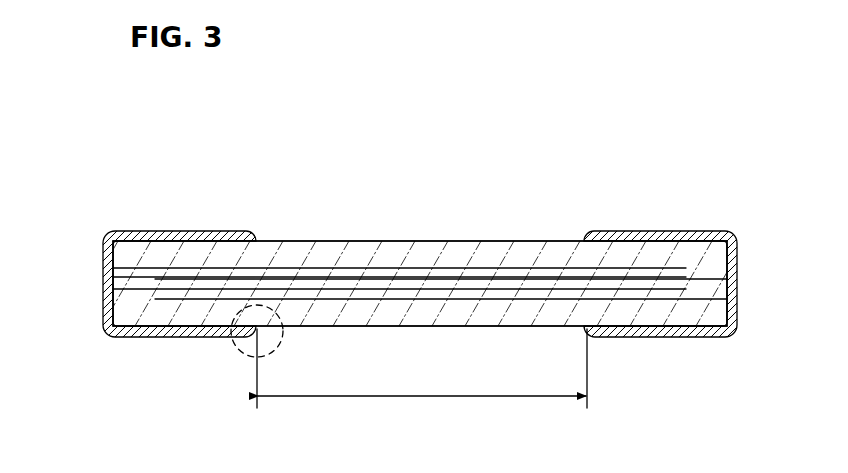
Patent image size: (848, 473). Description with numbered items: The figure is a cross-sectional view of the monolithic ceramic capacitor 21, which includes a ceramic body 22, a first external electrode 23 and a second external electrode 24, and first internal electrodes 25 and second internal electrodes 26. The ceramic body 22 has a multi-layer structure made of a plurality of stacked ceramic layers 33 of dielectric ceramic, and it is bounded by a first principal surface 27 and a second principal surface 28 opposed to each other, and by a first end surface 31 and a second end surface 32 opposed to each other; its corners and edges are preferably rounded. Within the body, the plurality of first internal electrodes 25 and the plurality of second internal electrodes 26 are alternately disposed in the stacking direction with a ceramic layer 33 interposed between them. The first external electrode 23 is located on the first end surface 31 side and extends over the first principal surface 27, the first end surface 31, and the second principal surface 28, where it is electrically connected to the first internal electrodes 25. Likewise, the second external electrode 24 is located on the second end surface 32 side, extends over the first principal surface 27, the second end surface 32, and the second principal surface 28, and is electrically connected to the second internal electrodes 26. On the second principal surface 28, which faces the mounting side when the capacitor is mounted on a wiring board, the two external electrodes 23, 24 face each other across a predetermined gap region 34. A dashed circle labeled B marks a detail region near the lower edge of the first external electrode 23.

The monolithic ceramic capacitor 21 is at (202, 122).
The ceramic body 22 is at (472, 240).
The first external electrode 23 is at (107, 311).
The second external electrode 24 is at (738, 300).
The first internal electrodes 25 is at (329, 288).
The second internal electrodes 26 is at (507, 280).
The first principal surface 27 is at (400, 241).
The second principal surface 28 is at (352, 327).
The first end surface 31 is at (113, 283).
The second end surface 32 is at (728, 272).
The ceramic layers 33 is at (547, 285).
The gap region 34 is at (387, 397).
The detail region B is at (243, 352).